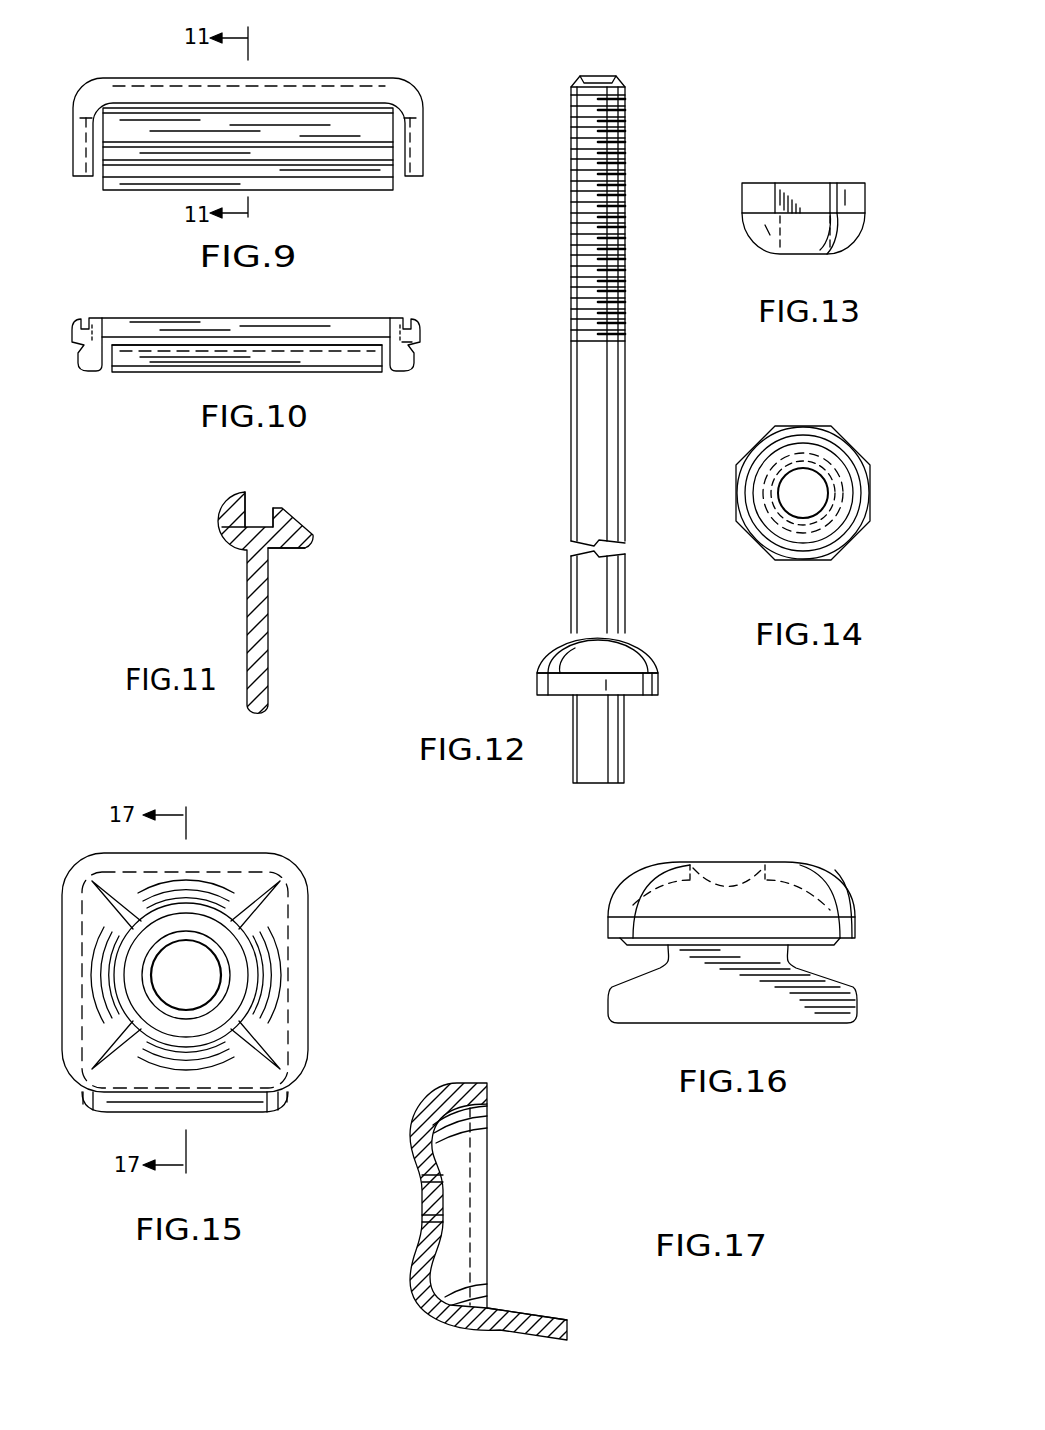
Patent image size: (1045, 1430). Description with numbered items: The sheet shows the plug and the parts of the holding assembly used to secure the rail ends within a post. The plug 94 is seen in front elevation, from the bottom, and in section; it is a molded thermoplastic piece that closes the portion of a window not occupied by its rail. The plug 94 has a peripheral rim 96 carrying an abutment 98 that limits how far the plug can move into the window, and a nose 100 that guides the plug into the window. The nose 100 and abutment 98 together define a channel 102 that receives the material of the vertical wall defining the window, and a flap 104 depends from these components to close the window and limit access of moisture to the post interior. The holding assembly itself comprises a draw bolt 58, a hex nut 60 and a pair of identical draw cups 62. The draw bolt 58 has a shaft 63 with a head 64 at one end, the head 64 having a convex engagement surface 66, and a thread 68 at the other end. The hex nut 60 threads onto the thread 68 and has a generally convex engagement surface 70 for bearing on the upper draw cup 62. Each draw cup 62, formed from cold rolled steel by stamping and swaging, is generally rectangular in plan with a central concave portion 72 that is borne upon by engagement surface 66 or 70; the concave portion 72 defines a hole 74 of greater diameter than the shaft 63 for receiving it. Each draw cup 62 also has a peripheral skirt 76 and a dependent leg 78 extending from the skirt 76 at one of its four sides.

In FIG. 9, the plug 94 is at (394, 54).
In FIG. 10, the plug 94 is at (398, 294).
In FIG. 11, the plug 94 is at (354, 507).
In FIG. 9, the peripheral rim 96 is at (413, 91).
In FIG. 10, the abutment 98 is at (417, 320).
In FIG. 11, the abutment 98 is at (218, 505).
In FIG. 10, the nose 100 is at (404, 371).
In FIG. 11, the nose 100 is at (313, 537).
In FIG. 10, the channel 102 is at (413, 343).
In FIG. 11, the channel 102 is at (257, 507).
In FIG. 9, the flap 104 is at (342, 136).
In FIG. 10, the flap 104 is at (172, 337).
In FIG. 11, the flap 104 is at (247, 613).
In FIG. 12, the draw bolt 58 is at (639, 392).
In FIG. 12, the shaft 63 is at (613, 451).
In FIG. 12, the head 64 is at (660, 685).
In FIG. 12, the convex engagement surface 66 is at (642, 643).
In FIG. 12, the thread 68 is at (613, 143).
In FIG. 13, the hex nut 60 is at (868, 192).
In FIG. 14, the hex nut 60 is at (871, 488).
In FIG. 13, the convex engagement surface 70 is at (848, 236).
In FIG. 14, the convex engagement surface 70 is at (840, 536).
In FIG. 15, the draw cup 62 is at (330, 865).
In FIG. 16, the draw cup 62 is at (771, 841).
In FIG. 17, the draw cup 62 is at (530, 1192).
In FIG. 15, the central concave portion 72 is at (249, 995).
In FIG. 17, the central concave portion 72 is at (417, 1268).
In FIG. 15, the hole 74 is at (207, 969).
In FIG. 17, the hole 74 is at (433, 1195).
In FIG. 15, the peripheral skirt 76 is at (242, 852).
In FIG. 16, the peripheral skirt 76 is at (608, 917).
In FIG. 17, the peripheral skirt 76 is at (473, 1083).
In FIG. 15, the dependent leg 78 is at (253, 1108).
In FIG. 16, the dependent leg 78 is at (838, 1010).
In FIG. 17, the dependent leg 78 is at (551, 1322).